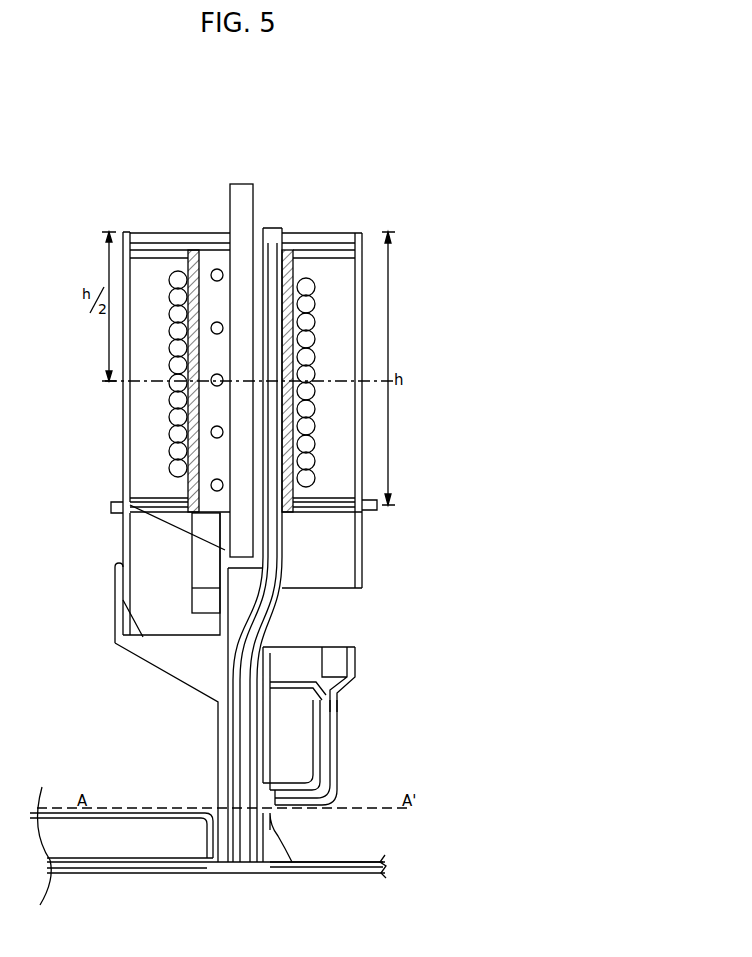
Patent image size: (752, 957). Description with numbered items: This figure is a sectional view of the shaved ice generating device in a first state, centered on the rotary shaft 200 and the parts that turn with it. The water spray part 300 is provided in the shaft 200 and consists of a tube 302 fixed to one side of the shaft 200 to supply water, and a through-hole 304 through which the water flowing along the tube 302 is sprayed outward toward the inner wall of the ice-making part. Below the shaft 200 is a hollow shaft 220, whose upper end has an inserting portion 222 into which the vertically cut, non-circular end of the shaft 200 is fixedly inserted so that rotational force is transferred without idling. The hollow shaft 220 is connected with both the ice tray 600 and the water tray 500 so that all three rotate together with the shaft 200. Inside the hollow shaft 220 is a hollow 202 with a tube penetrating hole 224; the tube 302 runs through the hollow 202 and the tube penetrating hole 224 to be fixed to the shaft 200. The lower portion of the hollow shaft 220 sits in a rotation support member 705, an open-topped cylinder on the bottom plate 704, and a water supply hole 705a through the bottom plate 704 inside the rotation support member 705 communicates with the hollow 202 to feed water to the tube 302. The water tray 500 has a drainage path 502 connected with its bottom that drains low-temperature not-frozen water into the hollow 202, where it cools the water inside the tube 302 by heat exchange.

The shaft 200 is at (244, 184).
The water spray part 300 is at (284, 226).
The tube 302 is at (285, 256).
The through-hole 304 is at (288, 251).
The inserting portion 222 is at (121, 505).
The hollow shaft 220 is at (225, 580).
The hollow 202 is at (232, 598).
The tube penetrating hole 224 is at (264, 646).
The water tray 500 is at (354, 673).
The drainage path 502 is at (336, 757).
The ice tray 600 is at (183, 683).
The water supply hole 705a is at (233, 872).
The rotation support member 705 is at (270, 854).
The bottom plate 704 is at (360, 876).